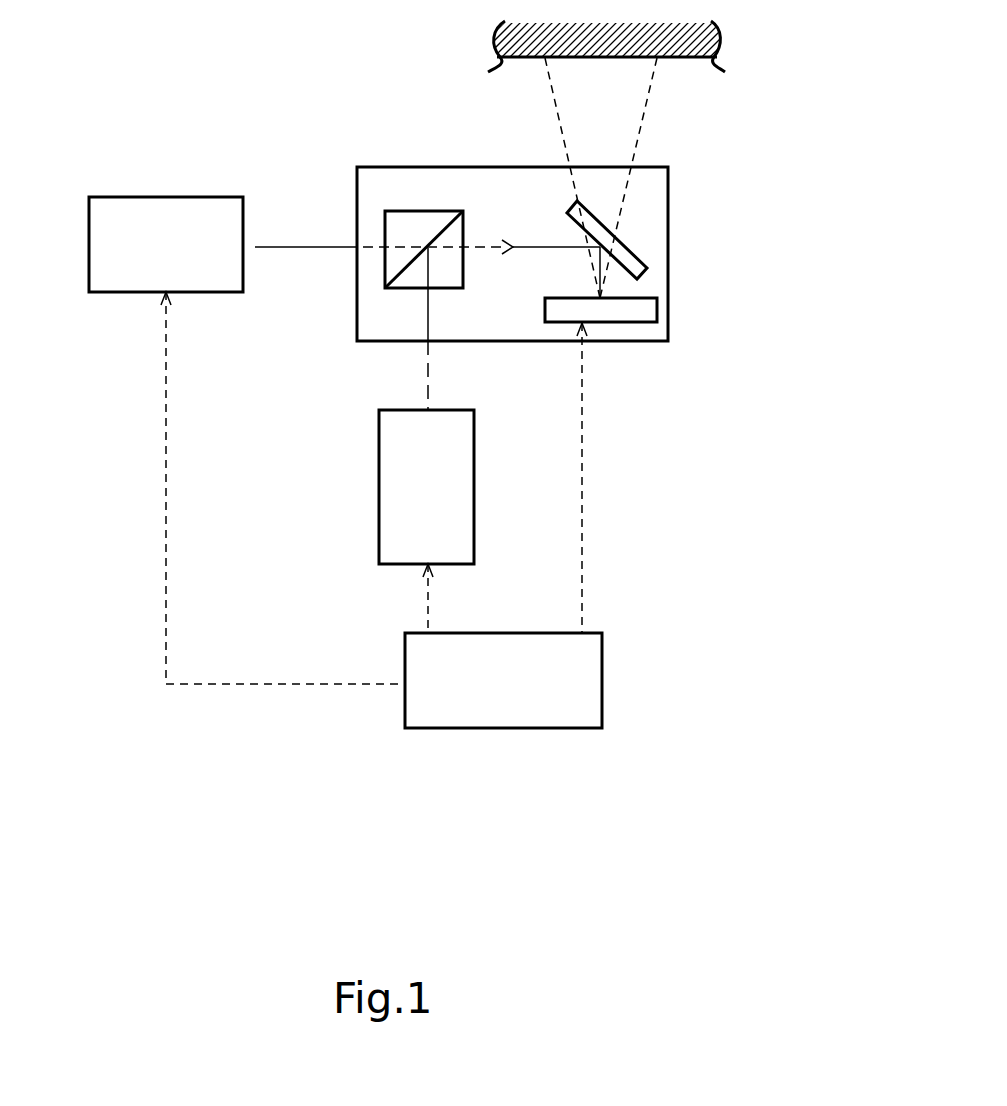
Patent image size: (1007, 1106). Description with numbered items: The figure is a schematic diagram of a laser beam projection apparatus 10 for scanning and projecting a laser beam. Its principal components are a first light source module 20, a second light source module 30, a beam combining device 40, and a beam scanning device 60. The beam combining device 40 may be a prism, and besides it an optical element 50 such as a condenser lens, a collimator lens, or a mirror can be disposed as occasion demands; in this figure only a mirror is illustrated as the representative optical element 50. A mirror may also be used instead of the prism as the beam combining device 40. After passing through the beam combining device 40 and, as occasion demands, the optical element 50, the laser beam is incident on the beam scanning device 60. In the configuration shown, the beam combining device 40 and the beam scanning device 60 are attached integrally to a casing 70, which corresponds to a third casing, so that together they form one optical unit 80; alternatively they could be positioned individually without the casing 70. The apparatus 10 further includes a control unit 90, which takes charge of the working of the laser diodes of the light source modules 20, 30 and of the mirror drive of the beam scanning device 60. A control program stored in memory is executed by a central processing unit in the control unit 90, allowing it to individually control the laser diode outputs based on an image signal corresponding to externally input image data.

The laser beam projection apparatus 10 is at (311, 75).
The first light source module 20 is at (494, 494).
The second light source module 30 is at (146, 166).
The beam combining device 40 is at (449, 200).
The optical element 50 is at (630, 248).
The beam scanning device 60 is at (623, 352).
The casing 70 is at (655, 166).
The optical unit 80 is at (424, 148).
The control unit 90 is at (508, 758).